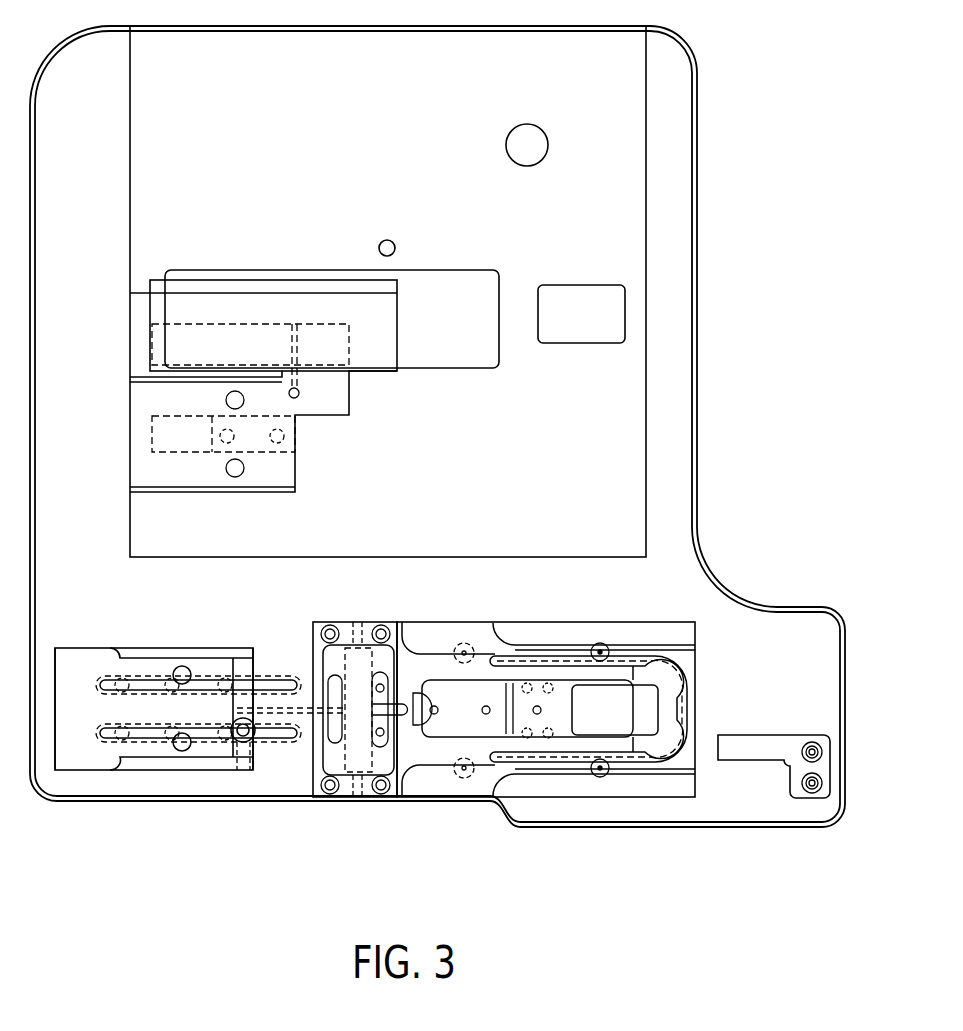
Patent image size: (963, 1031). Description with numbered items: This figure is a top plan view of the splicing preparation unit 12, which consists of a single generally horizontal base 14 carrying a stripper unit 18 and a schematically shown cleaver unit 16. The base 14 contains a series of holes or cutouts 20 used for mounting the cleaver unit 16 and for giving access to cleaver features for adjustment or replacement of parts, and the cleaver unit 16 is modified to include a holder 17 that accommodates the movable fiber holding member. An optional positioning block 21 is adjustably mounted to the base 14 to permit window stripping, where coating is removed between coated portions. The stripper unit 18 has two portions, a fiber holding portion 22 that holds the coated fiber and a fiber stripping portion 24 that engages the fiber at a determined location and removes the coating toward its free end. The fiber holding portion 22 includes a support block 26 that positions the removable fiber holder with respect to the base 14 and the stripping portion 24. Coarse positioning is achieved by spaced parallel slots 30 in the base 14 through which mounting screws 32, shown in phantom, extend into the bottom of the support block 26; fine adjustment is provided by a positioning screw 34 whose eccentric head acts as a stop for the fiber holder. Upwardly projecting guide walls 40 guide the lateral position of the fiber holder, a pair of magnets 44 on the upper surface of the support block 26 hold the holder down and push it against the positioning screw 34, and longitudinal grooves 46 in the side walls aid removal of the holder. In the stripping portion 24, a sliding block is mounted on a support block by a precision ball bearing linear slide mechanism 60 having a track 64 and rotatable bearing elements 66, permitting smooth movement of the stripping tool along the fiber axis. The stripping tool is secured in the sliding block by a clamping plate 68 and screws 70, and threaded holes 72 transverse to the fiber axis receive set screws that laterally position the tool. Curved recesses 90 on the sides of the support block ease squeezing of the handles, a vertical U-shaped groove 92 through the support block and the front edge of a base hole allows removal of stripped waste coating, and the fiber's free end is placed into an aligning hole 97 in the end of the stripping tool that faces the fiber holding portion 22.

The splicing preparation unit 12 is at (786, 266).
The base 14 is at (700, 354).
The cleaver unit 16 is at (142, 200).
The holder 17 is at (205, 470).
The stripper unit 18 is at (300, 793).
The cutouts 20 is at (532, 134).
The positioning block 21 is at (827, 767).
The fiber holding portion 22 is at (107, 822).
The fiber stripping portion 24 is at (428, 830).
The support block 26 is at (145, 646).
The slots 30 is at (266, 680).
The mounting screws 32 is at (167, 687).
The positioning screw 34 is at (243, 743).
The guide walls 40 is at (205, 648).
The magnets 44 is at (183, 668).
The longitudinal grooves 46 is at (80, 652).
The precision ball bearing linear slide mechanism 60 is at (537, 737).
The track 64 is at (548, 658).
The rotatable bearing elements 66 is at (600, 652).
The clamping plate 68 is at (318, 622).
The screws 70 is at (382, 630).
The threaded holes 72 is at (358, 622).
The curved recesses 90 is at (524, 634).
The vertical U-shaped groove 92 is at (407, 708).
The aligning hole 97 is at (311, 706).